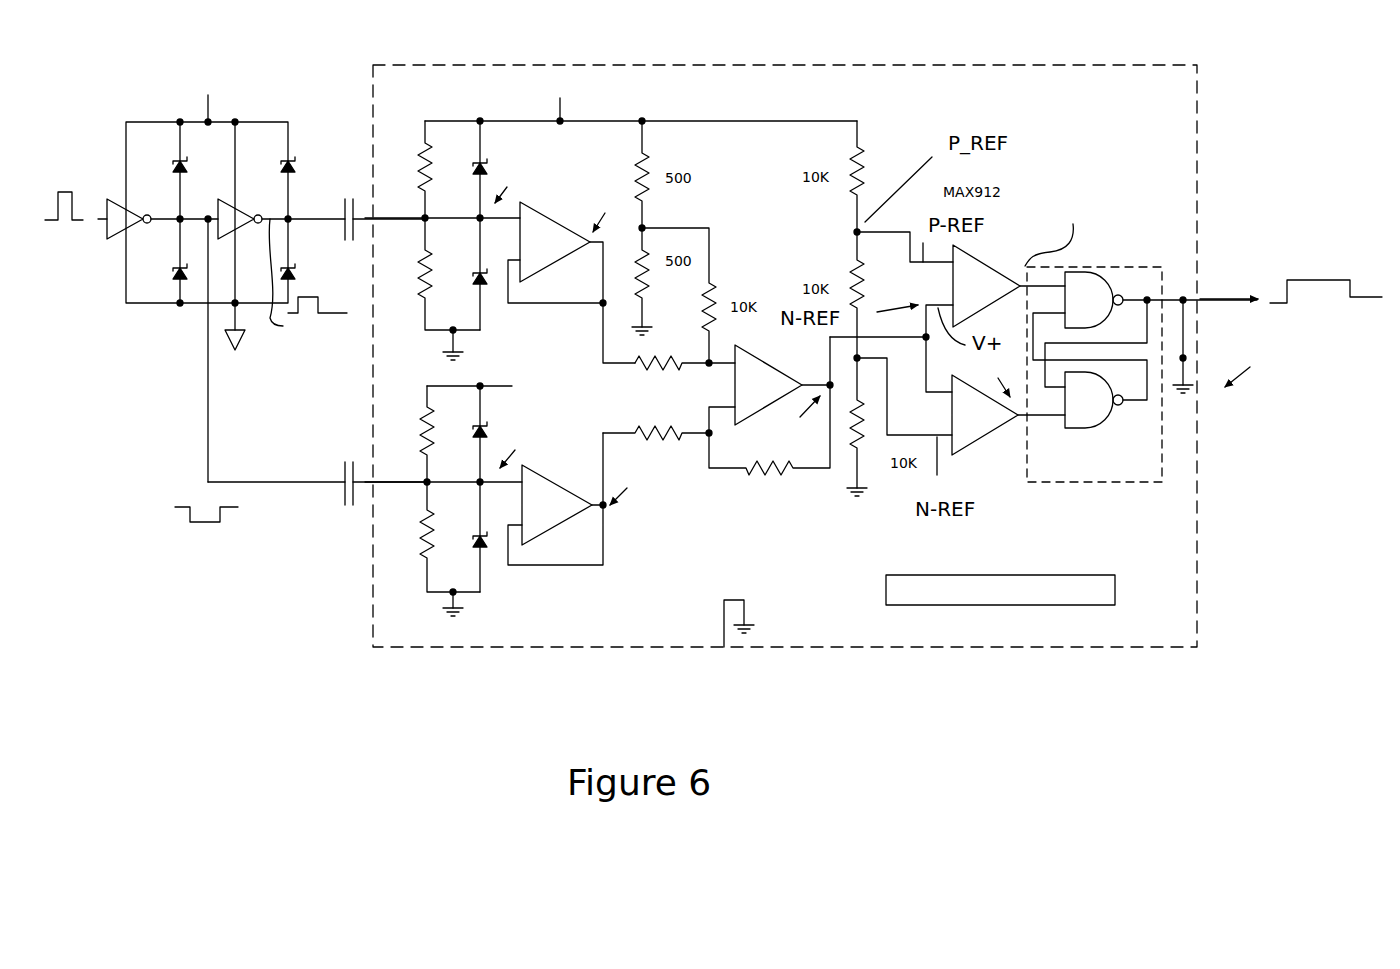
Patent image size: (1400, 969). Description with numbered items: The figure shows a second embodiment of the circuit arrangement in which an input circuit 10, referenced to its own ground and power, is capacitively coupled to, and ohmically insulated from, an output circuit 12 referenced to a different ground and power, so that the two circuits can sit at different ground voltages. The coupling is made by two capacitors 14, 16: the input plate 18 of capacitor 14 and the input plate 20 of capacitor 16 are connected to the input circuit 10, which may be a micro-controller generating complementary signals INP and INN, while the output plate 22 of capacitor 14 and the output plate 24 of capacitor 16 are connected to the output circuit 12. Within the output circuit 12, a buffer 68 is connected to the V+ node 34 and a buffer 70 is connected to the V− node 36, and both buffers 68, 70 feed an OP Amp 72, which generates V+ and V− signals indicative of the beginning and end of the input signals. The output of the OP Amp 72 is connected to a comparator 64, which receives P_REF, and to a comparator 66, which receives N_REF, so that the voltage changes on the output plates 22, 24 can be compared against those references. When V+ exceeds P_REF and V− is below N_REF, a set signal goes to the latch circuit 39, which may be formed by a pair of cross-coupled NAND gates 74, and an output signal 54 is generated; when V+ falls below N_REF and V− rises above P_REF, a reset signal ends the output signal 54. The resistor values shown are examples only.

The input circuit 10 is at (262, 103).
The output circuit 12 is at (1178, 108).
The capacitor 14 is at (340, 177).
The capacitor 16 is at (328, 498).
The input plate 18 is at (308, 259).
The input plate 20 is at (340, 467).
The output plate 22 is at (395, 201).
The output plate 24 is at (357, 468).
The V+ node 34 is at (426, 216).
The V− node 36 is at (428, 480).
The latch circuit 39 is at (1155, 270).
The output signal 54 is at (1308, 303).
The comparator 64 is at (992, 277).
The comparator 66 is at (983, 432).
The buffer 68 is at (550, 232).
The buffer 70 is at (550, 490).
The OP Amp 72 is at (857, 358).
The NAND gates 74 is at (1090, 287).